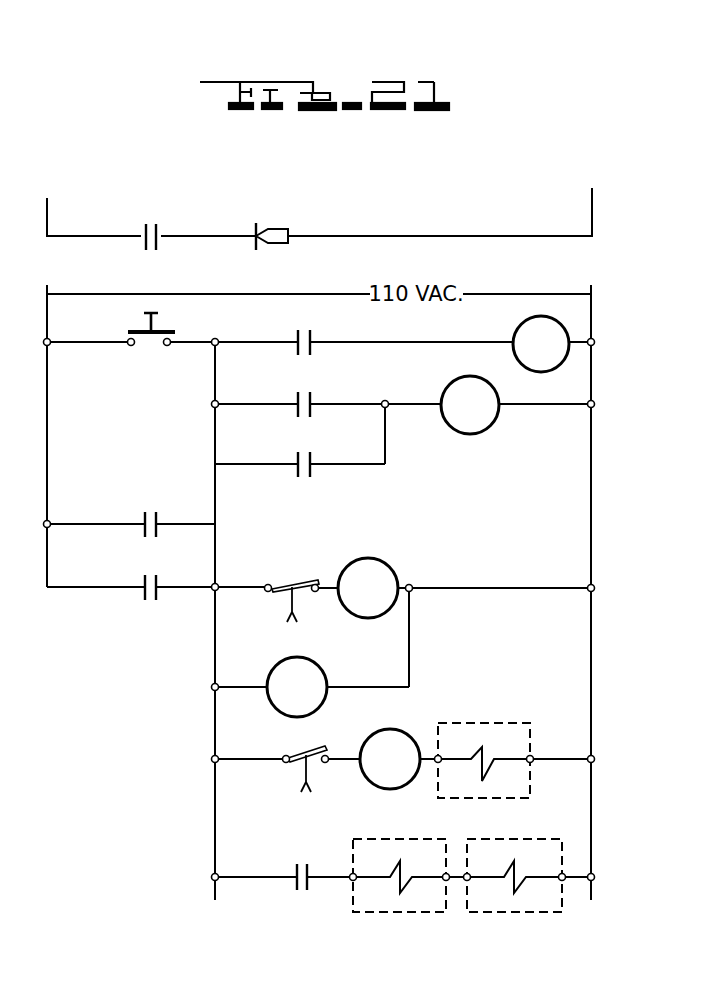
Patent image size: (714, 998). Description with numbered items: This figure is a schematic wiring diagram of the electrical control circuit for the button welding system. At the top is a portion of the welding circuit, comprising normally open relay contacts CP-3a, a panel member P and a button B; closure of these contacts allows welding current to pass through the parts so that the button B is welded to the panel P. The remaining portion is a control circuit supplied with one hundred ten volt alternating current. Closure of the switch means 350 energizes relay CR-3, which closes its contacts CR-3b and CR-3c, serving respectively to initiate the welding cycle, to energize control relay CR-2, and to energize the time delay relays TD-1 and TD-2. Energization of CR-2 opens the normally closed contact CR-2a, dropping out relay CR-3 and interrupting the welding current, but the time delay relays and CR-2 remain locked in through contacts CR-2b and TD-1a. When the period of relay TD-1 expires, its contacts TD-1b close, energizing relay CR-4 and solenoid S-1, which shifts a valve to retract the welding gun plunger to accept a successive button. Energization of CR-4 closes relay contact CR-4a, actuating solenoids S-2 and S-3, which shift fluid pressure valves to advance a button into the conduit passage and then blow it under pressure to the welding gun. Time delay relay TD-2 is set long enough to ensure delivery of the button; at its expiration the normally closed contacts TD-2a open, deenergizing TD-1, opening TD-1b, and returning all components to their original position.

The normally open relay contacts CP-3a is at (150, 225).
The panel member P is at (256, 236).
The button B is at (277, 235).
The switch means 350 is at (147, 323).
The normally closed contact CR-2a is at (303, 330).
The relay CR-3 is at (541, 344).
The relay contacts CR-3b is at (303, 391).
The control relay CR-2 is at (470, 405).
The relay contacts CR-2b is at (303, 452).
The relay contacts CR-3c is at (150, 511).
The time delay relay contacts TD-1a is at (148, 574).
The normally closed time delay contacts TD-2a is at (290, 583).
The time delay relay TD-1 is at (368, 588).
The time delay relay TD-2 is at (297, 687).
The time delay relay contacts TD-1b is at (299, 756).
The relay CR-4 is at (390, 759).
The solenoid S-1 is at (484, 760).
The relay contact CR-4a is at (295, 863).
The solenoid S-2 is at (400, 875).
The solenoid S-3 is at (515, 875).